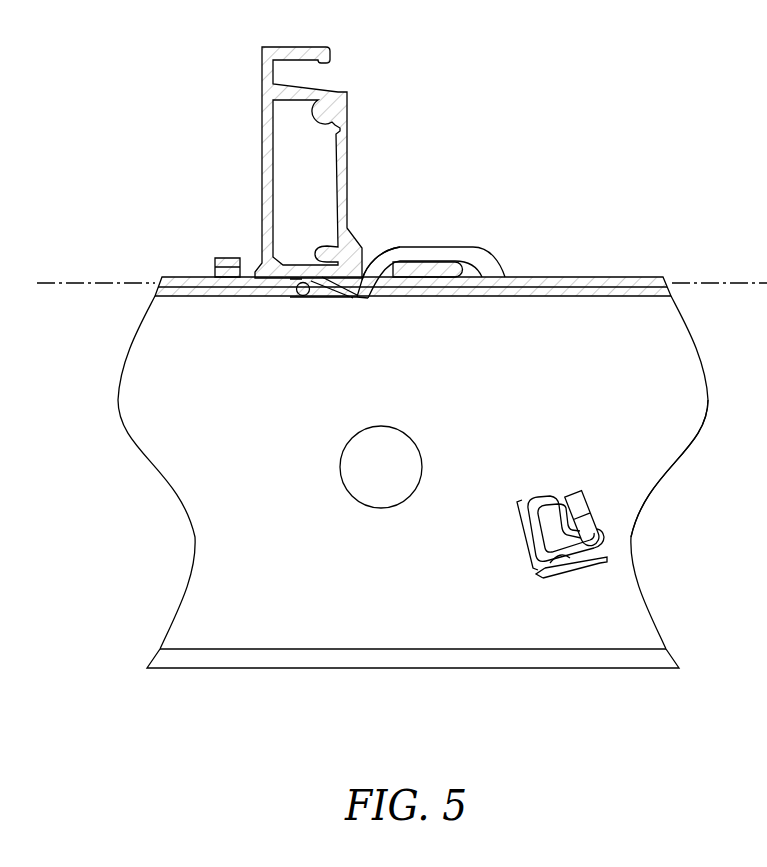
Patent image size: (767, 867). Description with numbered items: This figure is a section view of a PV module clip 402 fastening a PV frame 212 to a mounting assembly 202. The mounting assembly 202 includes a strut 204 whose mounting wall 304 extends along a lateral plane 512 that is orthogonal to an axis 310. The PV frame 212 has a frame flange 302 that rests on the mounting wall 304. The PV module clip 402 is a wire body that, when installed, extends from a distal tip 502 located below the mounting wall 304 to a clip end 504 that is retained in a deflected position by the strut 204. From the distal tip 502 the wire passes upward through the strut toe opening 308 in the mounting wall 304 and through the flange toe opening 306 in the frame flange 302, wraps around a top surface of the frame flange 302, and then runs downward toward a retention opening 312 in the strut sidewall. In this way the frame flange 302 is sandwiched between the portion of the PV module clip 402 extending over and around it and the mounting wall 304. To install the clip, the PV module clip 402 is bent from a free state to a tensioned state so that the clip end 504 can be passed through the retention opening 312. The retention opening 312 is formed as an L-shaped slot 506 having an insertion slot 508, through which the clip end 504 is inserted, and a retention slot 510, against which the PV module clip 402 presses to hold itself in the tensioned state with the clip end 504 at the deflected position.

The mounting assembly 202 is at (258, 668).
The strut 204 is at (675, 560).
The PV frame 212 is at (254, 133).
The frame flange 302 is at (432, 270).
The mounting wall 304 is at (590, 277).
The flange toe opening 306 is at (367, 262).
The strut toe opening 308 is at (390, 295).
The axis 310 is at (605, 630).
The retention opening 312 is at (548, 577).
The PV module clip 402 is at (417, 248).
The distal tip 502 is at (297, 292).
The clip end 504 is at (572, 490).
The L-shaped slot 506 is at (575, 621).
The insertion slot 508 is at (523, 538).
The retention slot 510 is at (583, 570).
The lateral plane 512 is at (103, 282).